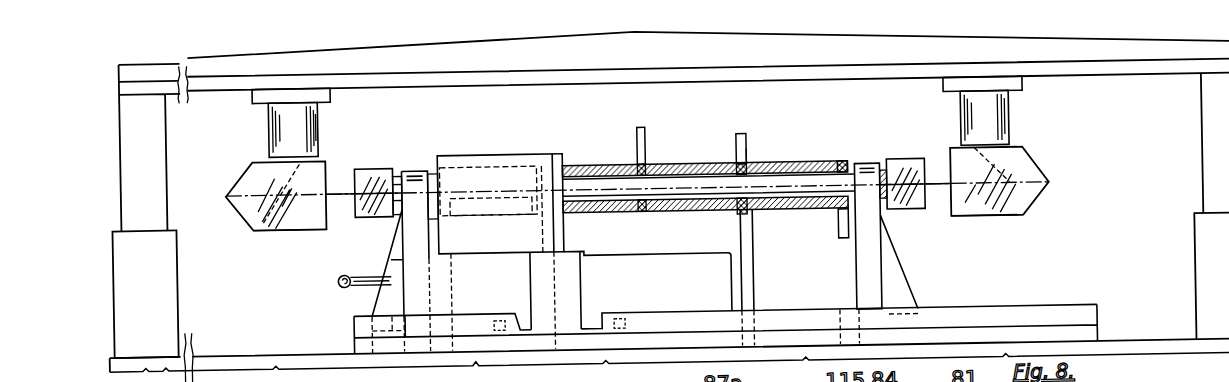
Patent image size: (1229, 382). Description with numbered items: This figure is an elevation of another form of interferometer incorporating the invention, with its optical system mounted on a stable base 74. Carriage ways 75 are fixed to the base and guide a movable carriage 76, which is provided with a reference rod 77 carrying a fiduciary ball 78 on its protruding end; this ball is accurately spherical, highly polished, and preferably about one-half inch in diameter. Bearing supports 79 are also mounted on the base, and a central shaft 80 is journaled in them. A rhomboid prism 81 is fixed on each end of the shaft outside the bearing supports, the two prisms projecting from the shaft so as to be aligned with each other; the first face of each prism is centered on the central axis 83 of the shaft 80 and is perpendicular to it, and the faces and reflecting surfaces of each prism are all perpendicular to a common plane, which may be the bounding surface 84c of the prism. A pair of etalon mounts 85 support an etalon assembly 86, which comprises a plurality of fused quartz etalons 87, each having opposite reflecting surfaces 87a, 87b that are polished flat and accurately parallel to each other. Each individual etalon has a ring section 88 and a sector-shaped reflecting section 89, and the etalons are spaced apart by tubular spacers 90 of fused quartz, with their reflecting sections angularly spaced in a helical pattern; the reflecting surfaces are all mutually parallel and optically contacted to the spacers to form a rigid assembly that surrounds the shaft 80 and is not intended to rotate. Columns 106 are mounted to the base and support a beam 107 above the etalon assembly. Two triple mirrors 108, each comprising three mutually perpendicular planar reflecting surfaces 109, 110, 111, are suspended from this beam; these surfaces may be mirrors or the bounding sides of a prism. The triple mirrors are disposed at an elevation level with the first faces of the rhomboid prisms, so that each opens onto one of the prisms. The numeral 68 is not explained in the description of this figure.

The lower bearing sleeve 68 is at (740, 213).
The stable base 74 is at (269, 351).
The carriage ways 75 is at (1093, 330).
The movable carriage 76 is at (600, 253).
The reference rod 77 is at (368, 270).
The fiduciary ball 78 is at (337, 277).
The bearing supports 79 is at (423, 163).
The central shaft 80 is at (433, 200).
The rhomboid prism 81 is at (367, 164).
The central axis 83 is at (356, 197).
The bounding surface 84c is at (383, 214).
The etalon mounts 85 is at (575, 229).
The etalon assembly 86 is at (688, 163).
The fused quartz etalon 87 is at (645, 127).
The reflecting surface 87a is at (737, 136).
The reflecting surface 87b is at (750, 153).
The ring section 88 is at (847, 164).
The sector-shaped reflecting section 89 is at (637, 137).
The tubular spacers 90 is at (652, 164).
The columns 106 is at (163, 142).
The beam 107 is at (556, 89).
The triple mirror 108 is at (248, 161).
The planar reflecting surface 109 is at (251, 218).
The planar reflecting surface 110 is at (244, 176).
The planar reflecting surface 111 is at (635, 186).